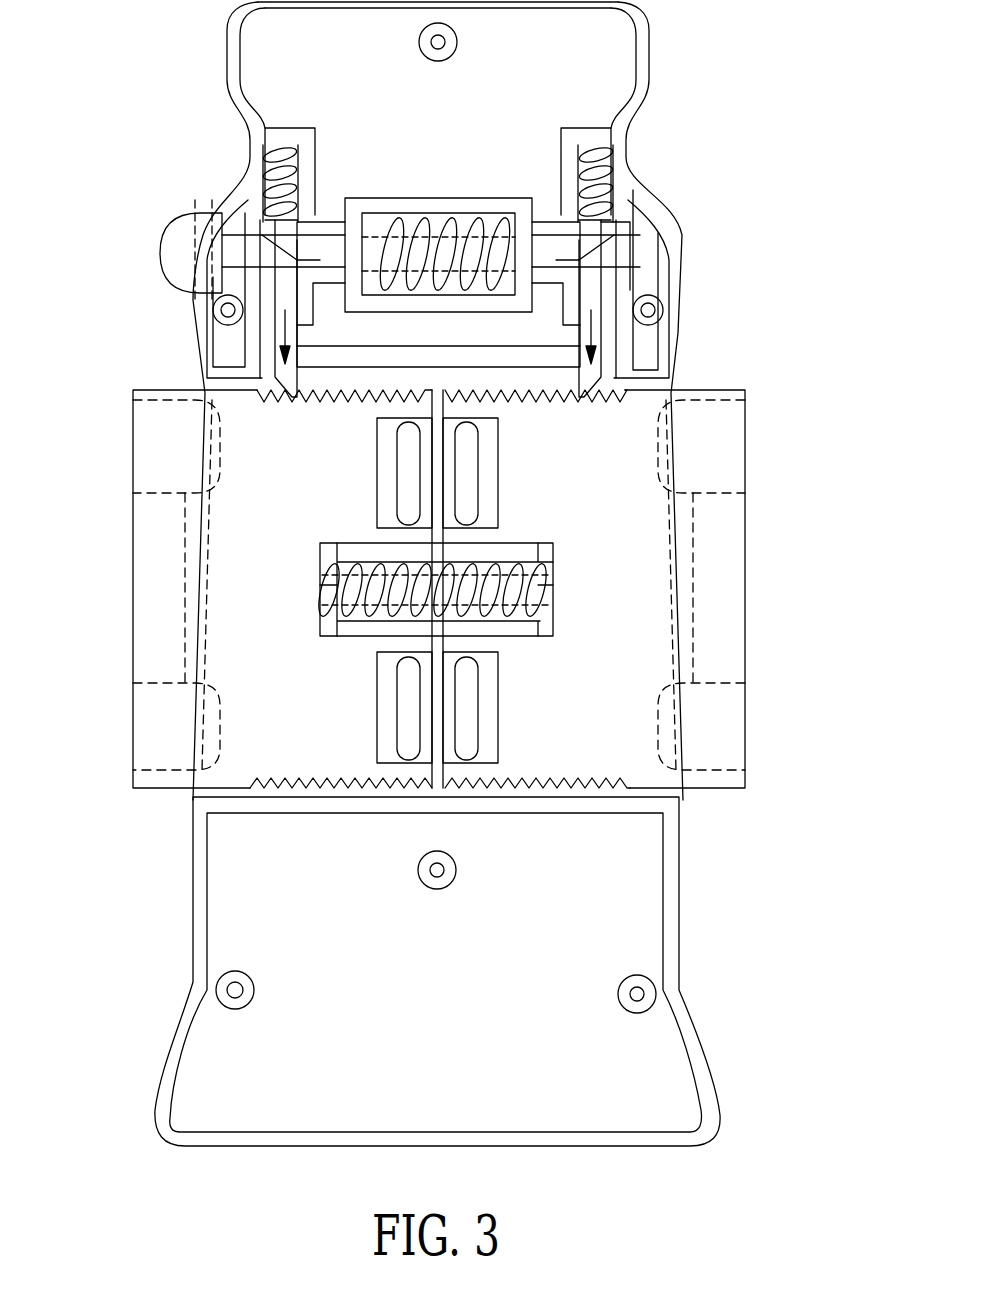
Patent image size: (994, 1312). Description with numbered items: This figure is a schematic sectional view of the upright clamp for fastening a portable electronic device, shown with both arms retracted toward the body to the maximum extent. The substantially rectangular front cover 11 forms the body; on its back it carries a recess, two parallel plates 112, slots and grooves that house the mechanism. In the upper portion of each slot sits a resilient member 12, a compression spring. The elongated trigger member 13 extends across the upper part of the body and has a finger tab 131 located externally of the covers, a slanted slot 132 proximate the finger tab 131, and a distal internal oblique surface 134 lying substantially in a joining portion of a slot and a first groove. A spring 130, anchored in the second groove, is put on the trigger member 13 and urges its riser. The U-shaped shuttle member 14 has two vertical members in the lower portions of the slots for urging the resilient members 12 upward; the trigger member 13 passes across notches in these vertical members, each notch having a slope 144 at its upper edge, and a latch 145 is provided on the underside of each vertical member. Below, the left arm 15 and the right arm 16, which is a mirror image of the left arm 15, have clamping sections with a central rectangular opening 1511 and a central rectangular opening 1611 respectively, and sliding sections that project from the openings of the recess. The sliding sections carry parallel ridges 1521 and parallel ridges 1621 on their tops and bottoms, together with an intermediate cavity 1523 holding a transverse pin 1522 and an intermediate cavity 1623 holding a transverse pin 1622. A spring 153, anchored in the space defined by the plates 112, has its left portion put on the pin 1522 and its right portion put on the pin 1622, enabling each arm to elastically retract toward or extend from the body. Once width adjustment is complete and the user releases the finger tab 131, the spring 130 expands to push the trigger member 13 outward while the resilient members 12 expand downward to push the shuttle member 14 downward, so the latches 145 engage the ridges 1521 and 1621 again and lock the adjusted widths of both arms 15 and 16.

The front cover 11 is at (653, 56).
The resilient member 12 is at (265, 160).
The trigger member 13 is at (152, 235).
The finger tab 131 is at (182, 277).
The shuttle member 14 is at (255, 205).
The spring 130 is at (403, 217).
The slanted slot 132 is at (283, 248).
The slope 144 is at (578, 252).
The oblique surface 134 is at (590, 245).
The latch 145 is at (262, 381).
The left arm 15 is at (133, 585).
The right arm 16 is at (745, 590).
The rectangular opening 1511 is at (160, 643).
The rectangular opening 1611 is at (720, 653).
The parallel ridges 1521 is at (330, 400).
The parallel ridges 1621 is at (560, 400).
The intermediate cavity 1523 is at (343, 550).
The intermediate cavity 1623 is at (555, 555).
The parallel plates 112 is at (357, 550).
The spring 153 is at (553, 573).
The transverse pin 1522 is at (345, 580).
The transverse pin 1622 is at (540, 595).